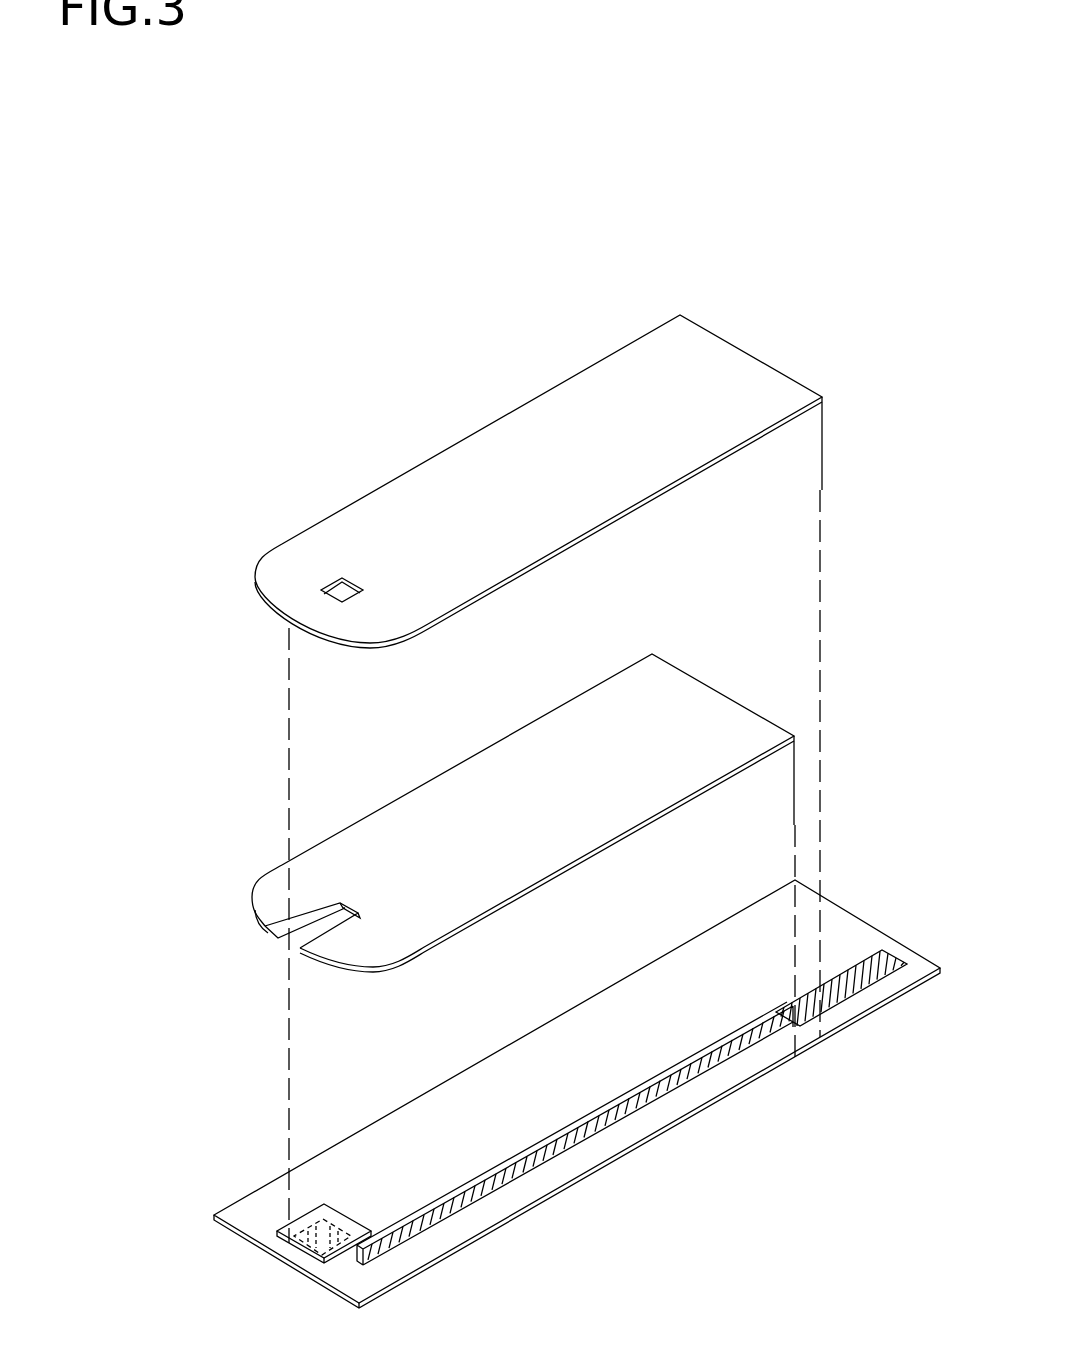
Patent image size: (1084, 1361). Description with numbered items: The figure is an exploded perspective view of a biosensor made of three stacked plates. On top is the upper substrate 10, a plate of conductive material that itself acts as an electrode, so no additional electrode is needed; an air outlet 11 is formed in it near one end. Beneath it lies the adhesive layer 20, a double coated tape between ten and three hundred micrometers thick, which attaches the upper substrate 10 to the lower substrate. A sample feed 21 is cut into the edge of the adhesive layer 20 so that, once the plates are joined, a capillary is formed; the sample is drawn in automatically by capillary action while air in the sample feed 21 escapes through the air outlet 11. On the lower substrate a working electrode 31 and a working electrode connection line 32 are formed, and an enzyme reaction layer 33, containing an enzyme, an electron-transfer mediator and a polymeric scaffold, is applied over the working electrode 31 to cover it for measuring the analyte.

The upper substrate 10 is at (542, 418).
The air outlet 11 is at (340, 590).
The adhesive layer 20 is at (357, 843).
The sample feed 21 is at (302, 932).
The working electrode 31 is at (280, 1242).
The working electrode connection line 32 is at (835, 993).
The enzyme reaction layer 33 is at (313, 1212).